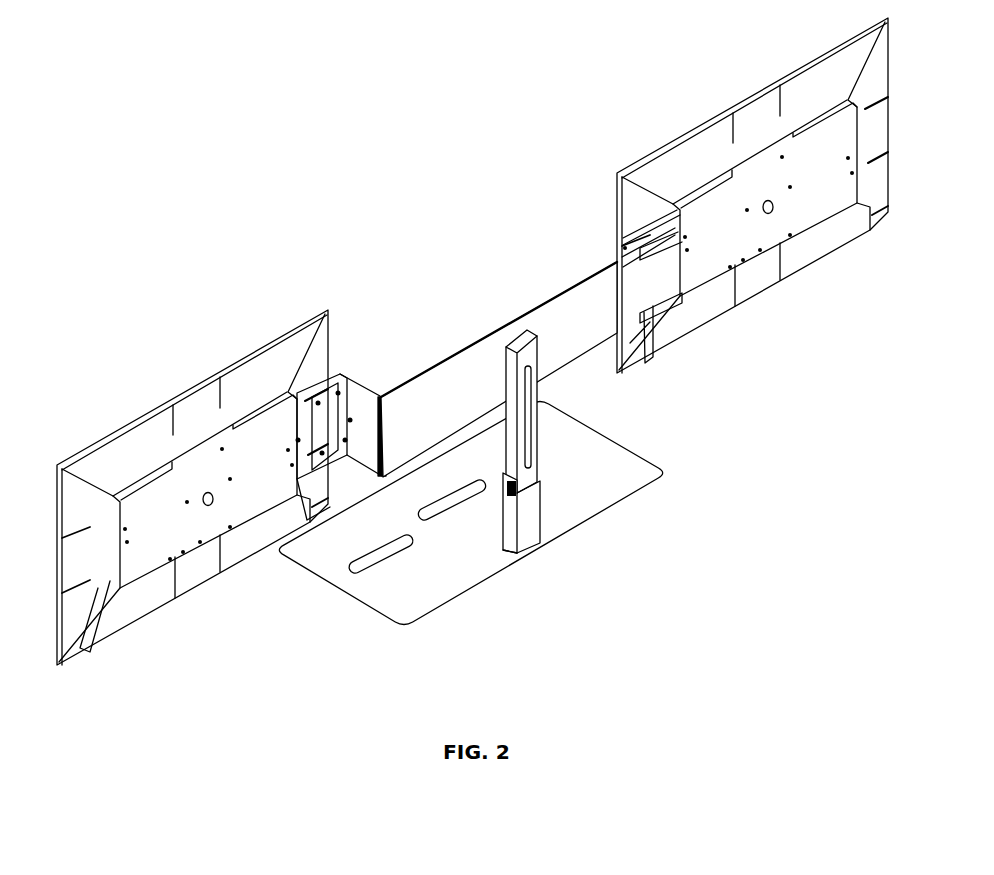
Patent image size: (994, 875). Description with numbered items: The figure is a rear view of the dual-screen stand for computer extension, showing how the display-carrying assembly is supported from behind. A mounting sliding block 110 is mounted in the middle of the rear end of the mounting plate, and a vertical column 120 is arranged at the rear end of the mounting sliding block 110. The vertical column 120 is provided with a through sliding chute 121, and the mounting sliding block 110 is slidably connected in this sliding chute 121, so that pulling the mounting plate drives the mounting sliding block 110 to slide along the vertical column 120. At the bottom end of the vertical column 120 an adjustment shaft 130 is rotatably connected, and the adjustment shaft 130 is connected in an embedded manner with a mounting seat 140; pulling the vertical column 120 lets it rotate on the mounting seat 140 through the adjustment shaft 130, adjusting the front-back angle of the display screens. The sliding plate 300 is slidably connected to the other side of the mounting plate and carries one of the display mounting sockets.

The mounting sliding block 110 is at (557, 413).
The vertical column 120 is at (546, 403).
The sliding chute 121 is at (530, 443).
The adjustment shaft 130 is at (508, 553).
The mounting seat 140 is at (532, 505).
The sliding plate 300 is at (660, 308).